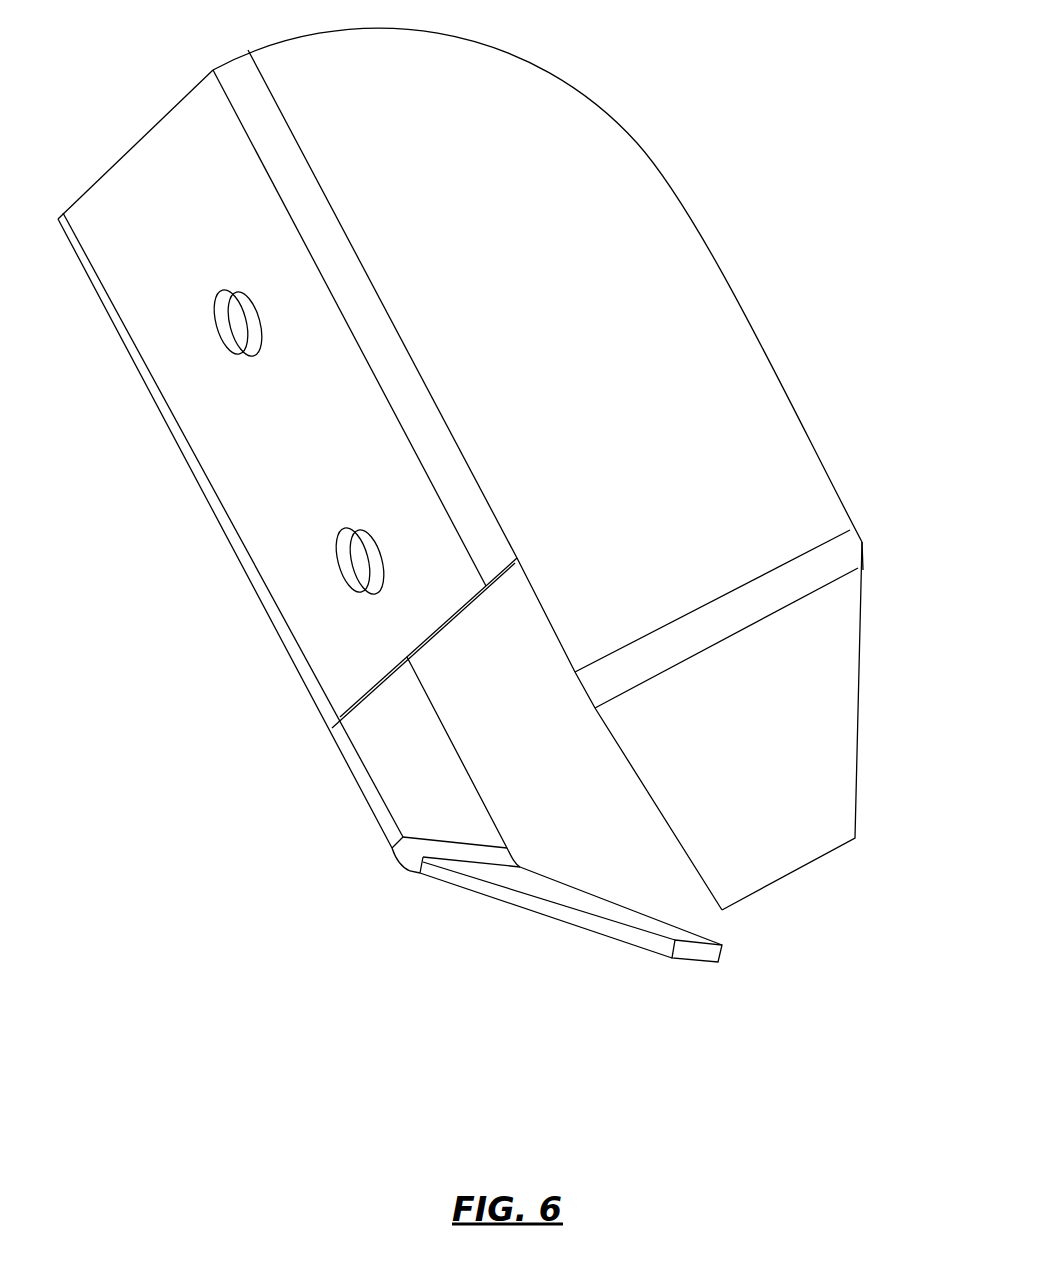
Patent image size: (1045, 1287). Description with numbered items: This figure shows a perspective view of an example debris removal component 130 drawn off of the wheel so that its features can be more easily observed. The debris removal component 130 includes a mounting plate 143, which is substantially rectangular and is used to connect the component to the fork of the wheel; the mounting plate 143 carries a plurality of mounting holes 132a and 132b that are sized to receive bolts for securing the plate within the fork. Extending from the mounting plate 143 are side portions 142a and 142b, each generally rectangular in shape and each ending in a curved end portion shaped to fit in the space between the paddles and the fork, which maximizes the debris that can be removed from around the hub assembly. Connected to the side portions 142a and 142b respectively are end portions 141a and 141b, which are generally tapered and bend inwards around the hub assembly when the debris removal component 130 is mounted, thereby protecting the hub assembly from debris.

The debris removal component 130 is at (104, 96).
The mounting hole 132a is at (250, 357).
The mounting hole 132b is at (352, 530).
The end portion 141a is at (843, 838).
The end portion 141b is at (683, 962).
The side portion 142a is at (346, 33).
The side portion 142b is at (445, 738).
The mounting plate 143 is at (125, 160).